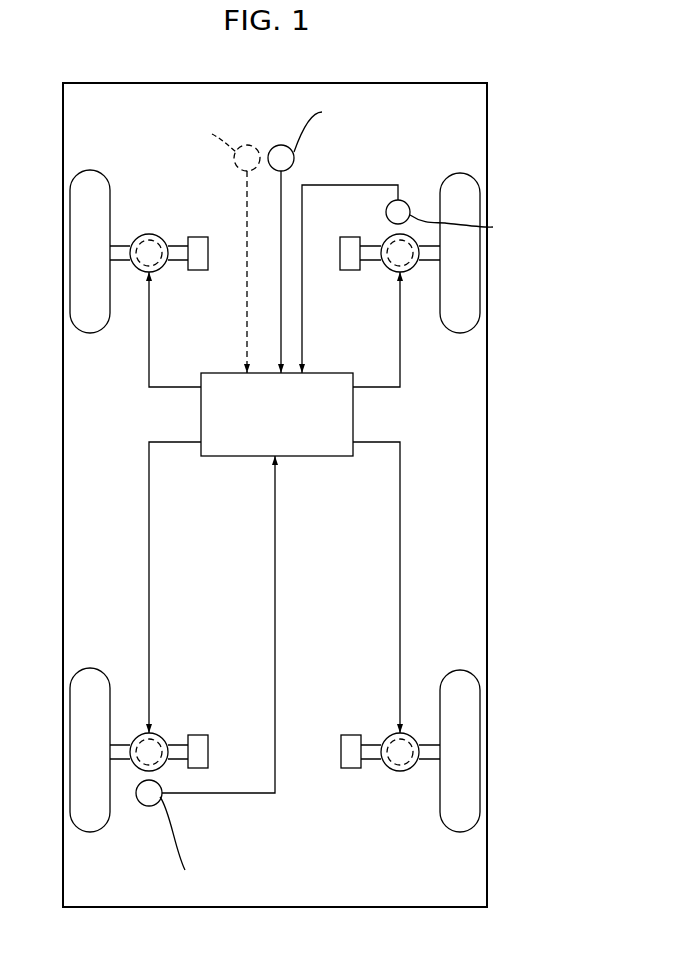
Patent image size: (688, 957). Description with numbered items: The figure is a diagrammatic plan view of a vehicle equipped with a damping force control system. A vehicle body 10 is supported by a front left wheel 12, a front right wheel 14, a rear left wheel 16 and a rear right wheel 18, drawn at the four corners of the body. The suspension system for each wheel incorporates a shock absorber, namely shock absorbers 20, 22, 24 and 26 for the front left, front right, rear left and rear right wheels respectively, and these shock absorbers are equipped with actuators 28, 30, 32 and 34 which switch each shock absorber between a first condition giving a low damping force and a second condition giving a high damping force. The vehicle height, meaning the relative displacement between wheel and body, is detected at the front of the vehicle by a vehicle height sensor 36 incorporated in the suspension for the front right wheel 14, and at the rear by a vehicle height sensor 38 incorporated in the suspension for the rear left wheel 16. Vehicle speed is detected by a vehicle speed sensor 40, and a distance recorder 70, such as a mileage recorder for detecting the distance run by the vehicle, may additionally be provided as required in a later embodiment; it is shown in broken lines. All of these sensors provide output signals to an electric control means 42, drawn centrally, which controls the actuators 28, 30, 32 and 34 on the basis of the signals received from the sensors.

The vehicle body 10 is at (487, 88).
The front left wheel 12 is at (92, 170).
The front right wheel 14 is at (460, 173).
The rear left wheel 16 is at (90, 832).
The rear right wheel 18 is at (461, 832).
The shock absorber 20 is at (147, 234).
The shock absorber 22 is at (388, 270).
The shock absorber 24 is at (163, 770).
The shock absorber 26 is at (390, 770).
The actuator 28 is at (163, 270).
The actuator 30 is at (387, 238).
The actuator 32 is at (160, 738).
The actuator 34 is at (388, 738).
The vehicle height sensor 36 is at (404, 200).
The vehicle height sensor 38 is at (147, 806).
The vehicle speed sensor 40 is at (281, 145).
The electric control means 42 is at (320, 456).
The distance recorder 70 is at (247, 145).